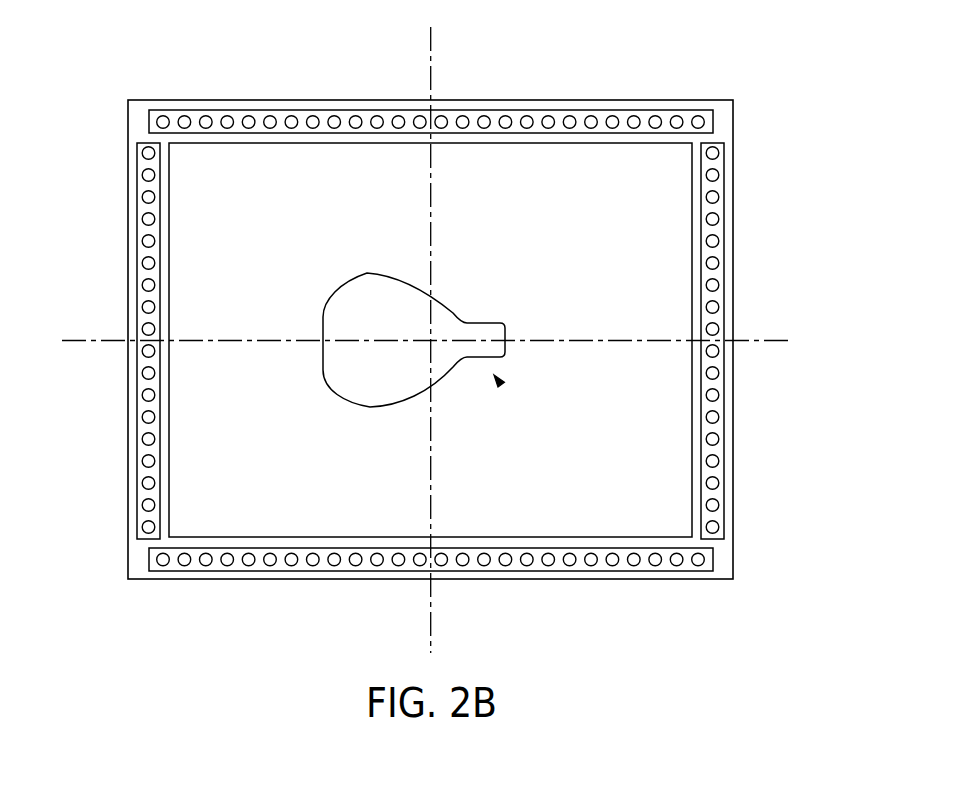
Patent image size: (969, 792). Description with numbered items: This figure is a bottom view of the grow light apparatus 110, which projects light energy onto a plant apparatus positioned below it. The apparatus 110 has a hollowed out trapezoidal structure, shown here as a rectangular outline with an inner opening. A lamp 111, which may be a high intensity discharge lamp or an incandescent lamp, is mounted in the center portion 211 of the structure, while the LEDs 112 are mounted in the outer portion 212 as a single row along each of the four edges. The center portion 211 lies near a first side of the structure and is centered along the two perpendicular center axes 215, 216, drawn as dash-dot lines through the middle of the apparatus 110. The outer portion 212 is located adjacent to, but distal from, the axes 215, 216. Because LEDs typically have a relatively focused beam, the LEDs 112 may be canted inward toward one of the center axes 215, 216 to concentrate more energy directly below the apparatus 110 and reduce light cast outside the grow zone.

The grow light apparatus 110 is at (430, 347).
The lamp 111 is at (363, 272).
The LEDs 112 is at (247, 110).
The center portion 211 is at (494, 375).
The outer portion 212 is at (128, 174).
The axis 215 is at (432, 597).
The axis 216 is at (785, 340).